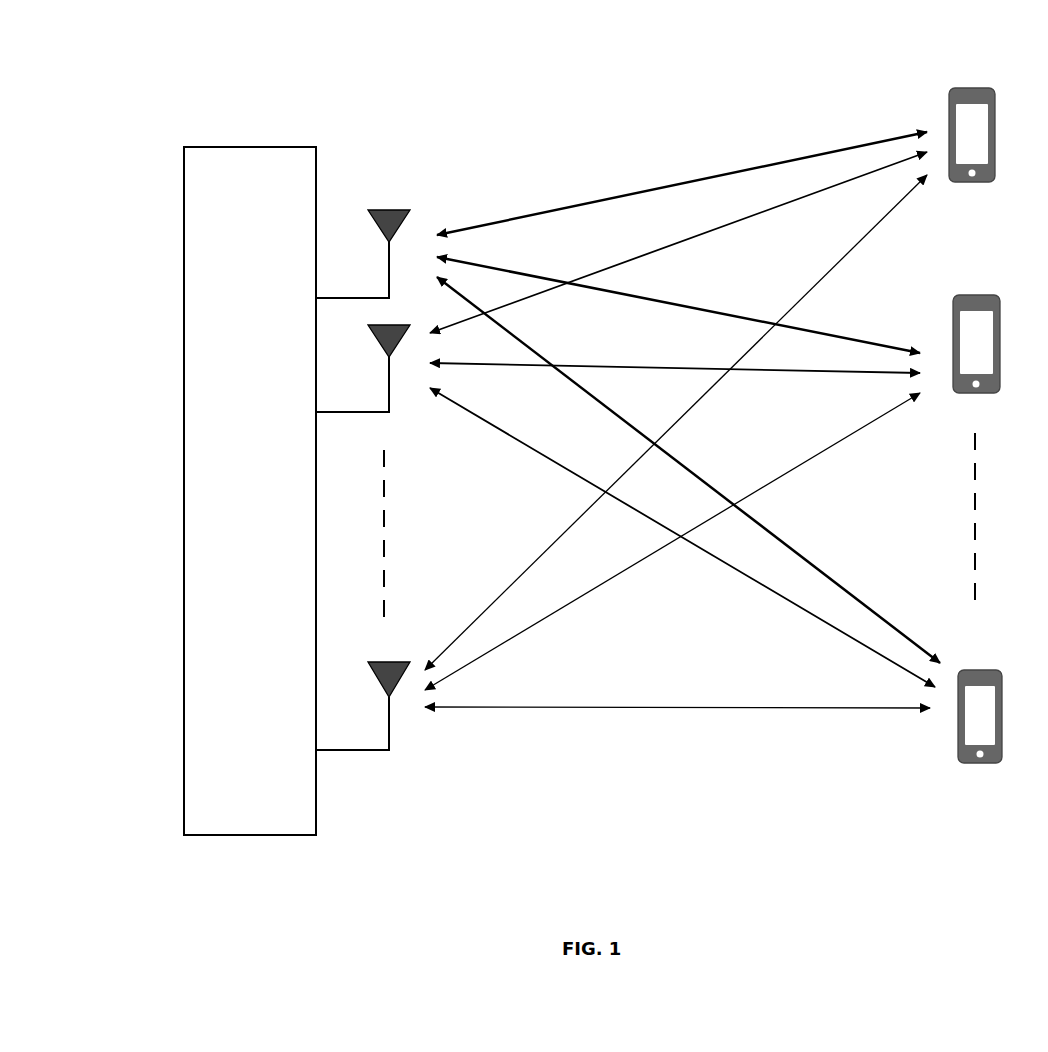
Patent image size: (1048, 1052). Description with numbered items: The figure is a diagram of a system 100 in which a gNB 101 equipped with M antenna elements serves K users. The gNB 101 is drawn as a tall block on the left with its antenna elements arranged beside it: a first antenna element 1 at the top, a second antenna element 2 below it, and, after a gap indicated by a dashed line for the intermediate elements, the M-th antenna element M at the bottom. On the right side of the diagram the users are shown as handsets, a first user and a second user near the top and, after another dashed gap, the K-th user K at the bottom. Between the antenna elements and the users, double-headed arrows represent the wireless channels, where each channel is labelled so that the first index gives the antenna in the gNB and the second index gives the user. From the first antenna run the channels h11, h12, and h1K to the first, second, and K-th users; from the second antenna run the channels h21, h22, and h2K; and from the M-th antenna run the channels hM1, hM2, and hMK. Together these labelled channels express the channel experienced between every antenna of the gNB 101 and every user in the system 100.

The system 100 is at (120, 82).
The gNB 101 is at (284, 152).
The first antenna element / first user 1 is at (363, 254).
The second antenna element / second user 2 is at (363, 368).
The M-th antenna element M is at (363, 706).
The K-th user K is at (990, 716).
The channel h11 is at (682, 183).
The channel h12 is at (678, 305).
The channel h1K is at (688, 470).
The channel h21 is at (678, 242).
The channel h22 is at (675, 353).
The channel h2K is at (682, 537).
The channel hM1 is at (676, 422).
The channel hM2 is at (672, 541).
The channel hMK is at (677, 717).